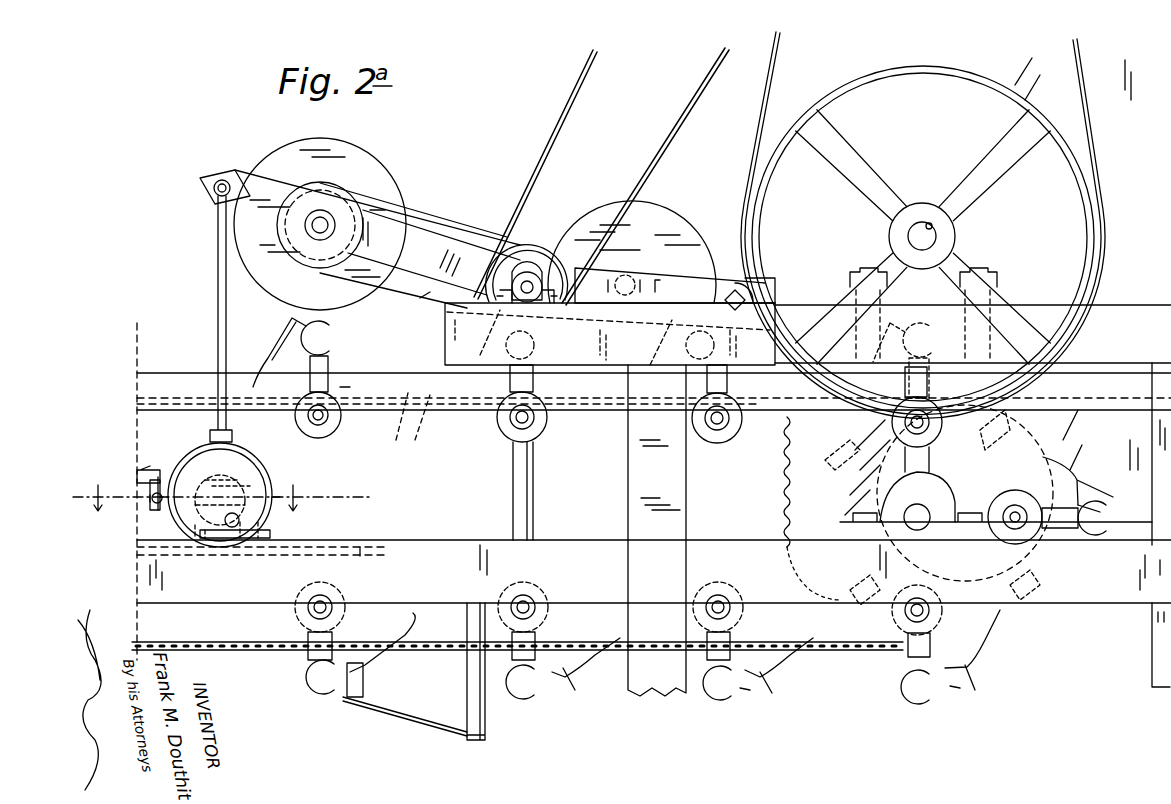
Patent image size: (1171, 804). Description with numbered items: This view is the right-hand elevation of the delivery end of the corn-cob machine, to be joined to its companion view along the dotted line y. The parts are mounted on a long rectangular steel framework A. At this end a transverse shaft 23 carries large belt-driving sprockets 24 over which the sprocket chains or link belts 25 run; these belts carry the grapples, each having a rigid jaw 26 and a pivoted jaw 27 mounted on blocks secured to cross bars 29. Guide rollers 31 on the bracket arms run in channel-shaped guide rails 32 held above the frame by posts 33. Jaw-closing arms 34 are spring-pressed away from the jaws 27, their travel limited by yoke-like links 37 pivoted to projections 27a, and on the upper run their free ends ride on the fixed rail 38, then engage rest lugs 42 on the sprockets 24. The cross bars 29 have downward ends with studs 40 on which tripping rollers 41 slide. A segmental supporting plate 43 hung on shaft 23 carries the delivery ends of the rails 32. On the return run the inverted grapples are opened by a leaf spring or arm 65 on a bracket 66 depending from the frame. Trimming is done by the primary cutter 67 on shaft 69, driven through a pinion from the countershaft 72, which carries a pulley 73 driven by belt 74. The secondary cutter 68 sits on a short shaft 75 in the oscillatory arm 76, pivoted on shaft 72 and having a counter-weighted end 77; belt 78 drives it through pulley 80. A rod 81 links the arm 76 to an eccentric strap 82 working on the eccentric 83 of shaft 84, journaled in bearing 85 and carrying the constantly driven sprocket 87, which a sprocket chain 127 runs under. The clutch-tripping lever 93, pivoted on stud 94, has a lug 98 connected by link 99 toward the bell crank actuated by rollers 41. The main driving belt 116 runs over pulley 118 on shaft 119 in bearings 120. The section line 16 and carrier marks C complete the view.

The section line 16 is at (221, 488).
The transverse shaft 23 is at (920, 512).
The belt-driving sprockets 24 is at (783, 485).
The sprocket chains or link belts 25 is at (425, 663).
The jaws 26 is at (340, 340).
The jaws 27 is at (340, 326).
The projections 27a is at (750, 690).
The cross bars 29 is at (512, 378).
The guide rollers 31 is at (340, 387).
The channel-shaped guide rails 32 is at (420, 420).
The posts 33 is at (513, 482).
The jaw-closing arms 34 is at (672, 511).
The yoke-like links 37 is at (364, 678).
The skid or fixed rail 38 is at (410, 428).
The projecting studs 40 is at (332, 418).
The tripping rollers 41 is at (530, 435).
The rest lugs or bars 42 is at (926, 507).
The segmental supporting plate 43 is at (993, 430).
The leaf spring or arm 65 is at (432, 725).
The bracket 66 is at (468, 695).
The primary knife or cutter 67 is at (668, 222).
The secondary knife or cutter 68 is at (375, 178).
The shaft 69 is at (712, 250).
The transverse countershaft 72 is at (552, 276).
The pulley 73 is at (530, 282).
The power-driven belt 74 is at (665, 145).
The short shaft 75 is at (318, 230).
The supporting oscillatory arm 76 is at (440, 247).
The counter-weighted end 77 is at (763, 278).
The belt 78 is at (420, 298).
The pulley 80 is at (366, 238).
The rod 81 is at (218, 327).
The eccentric strap 82 is at (245, 460).
The eccentric or crank 83 is at (250, 485).
The shaft 84 is at (242, 520).
The bearing 85 is at (258, 540).
The sprocket 87 is at (205, 540).
The clutch-tripping lever 93 is at (220, 494).
The stud 94 is at (152, 503).
The upstanding lug 98 is at (160, 478).
The link 99 is at (143, 468).
The main driving belt 116 is at (782, 68).
The pulley 118 is at (952, 70).
The transverse shaft 119 is at (934, 236).
The bearings 120 is at (1000, 286).
The sprocket chain 127 is at (362, 548).
The framework A is at (1142, 602).
The carrier C is at (815, 525).
The dotted line y— y is at (196, 361).